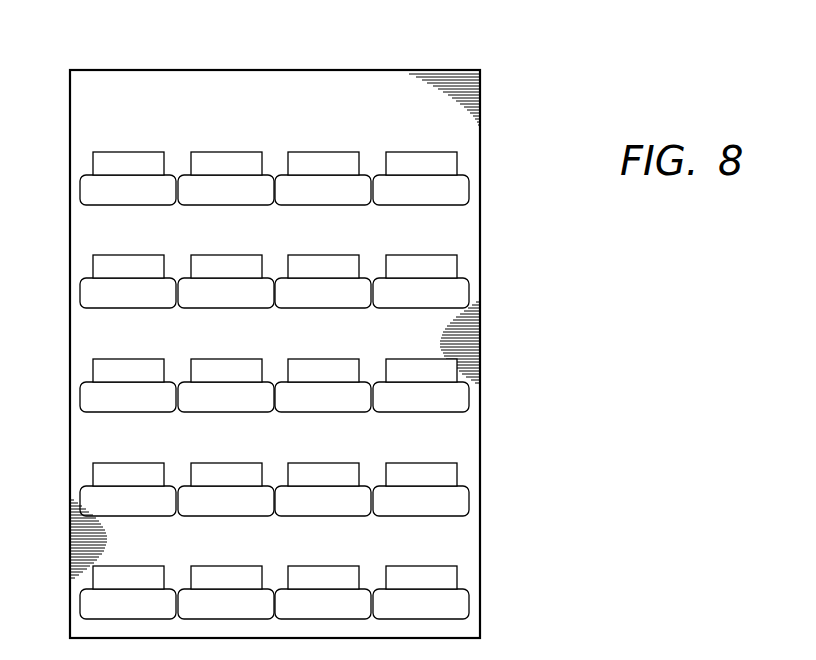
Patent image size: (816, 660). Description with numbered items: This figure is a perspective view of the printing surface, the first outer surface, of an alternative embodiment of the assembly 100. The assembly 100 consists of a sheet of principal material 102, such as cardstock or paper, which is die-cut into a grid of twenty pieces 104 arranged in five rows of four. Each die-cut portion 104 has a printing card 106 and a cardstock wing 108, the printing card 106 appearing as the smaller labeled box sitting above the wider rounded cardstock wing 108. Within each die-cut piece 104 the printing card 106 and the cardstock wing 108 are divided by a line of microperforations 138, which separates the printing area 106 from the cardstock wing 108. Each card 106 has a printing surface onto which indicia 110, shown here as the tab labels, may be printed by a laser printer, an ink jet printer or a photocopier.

The assembly 100 is at (540, 91).
The sheet of principal material 102 is at (207, 69).
The die-cut piece 104 is at (333, 152).
The printing card 106 is at (101, 160).
The cardstock wing 108 is at (80, 191).
The indicia 110 is at (447, 170).
The line of microperforations 138 is at (457, 278).